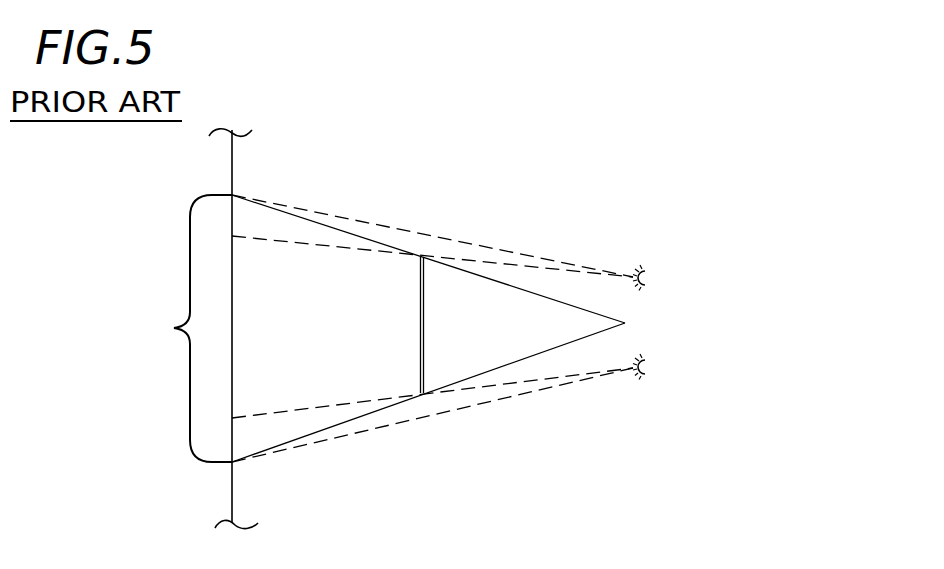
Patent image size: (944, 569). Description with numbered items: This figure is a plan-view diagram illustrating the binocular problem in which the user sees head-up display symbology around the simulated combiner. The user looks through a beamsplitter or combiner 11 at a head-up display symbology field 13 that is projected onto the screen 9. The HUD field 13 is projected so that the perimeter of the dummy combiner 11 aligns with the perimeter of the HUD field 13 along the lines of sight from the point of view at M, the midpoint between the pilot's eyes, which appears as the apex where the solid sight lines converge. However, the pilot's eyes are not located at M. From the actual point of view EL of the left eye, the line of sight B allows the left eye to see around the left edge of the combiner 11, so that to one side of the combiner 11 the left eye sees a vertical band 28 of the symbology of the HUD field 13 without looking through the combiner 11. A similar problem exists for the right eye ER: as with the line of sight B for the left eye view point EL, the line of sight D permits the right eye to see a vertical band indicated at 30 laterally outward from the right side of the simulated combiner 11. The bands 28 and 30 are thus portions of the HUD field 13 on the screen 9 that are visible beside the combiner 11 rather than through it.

The screen 9 is at (232, 167).
The head-up display symbology field 13 is at (188, 328).
The vertical band 30 is at (232, 217).
The vertical band 28 is at (233, 444).
The line of sight D is at (318, 246).
The line of sight B is at (337, 405).
The combiner 11 is at (423, 354).
The midpoint between the pilot's eyes M is at (642, 323).
The right eye ER is at (655, 274).
The left eye EL is at (658, 364).